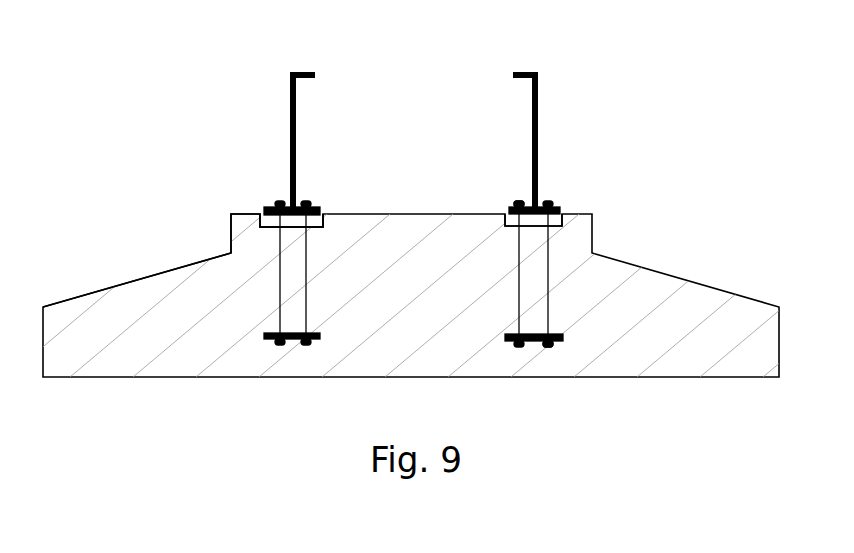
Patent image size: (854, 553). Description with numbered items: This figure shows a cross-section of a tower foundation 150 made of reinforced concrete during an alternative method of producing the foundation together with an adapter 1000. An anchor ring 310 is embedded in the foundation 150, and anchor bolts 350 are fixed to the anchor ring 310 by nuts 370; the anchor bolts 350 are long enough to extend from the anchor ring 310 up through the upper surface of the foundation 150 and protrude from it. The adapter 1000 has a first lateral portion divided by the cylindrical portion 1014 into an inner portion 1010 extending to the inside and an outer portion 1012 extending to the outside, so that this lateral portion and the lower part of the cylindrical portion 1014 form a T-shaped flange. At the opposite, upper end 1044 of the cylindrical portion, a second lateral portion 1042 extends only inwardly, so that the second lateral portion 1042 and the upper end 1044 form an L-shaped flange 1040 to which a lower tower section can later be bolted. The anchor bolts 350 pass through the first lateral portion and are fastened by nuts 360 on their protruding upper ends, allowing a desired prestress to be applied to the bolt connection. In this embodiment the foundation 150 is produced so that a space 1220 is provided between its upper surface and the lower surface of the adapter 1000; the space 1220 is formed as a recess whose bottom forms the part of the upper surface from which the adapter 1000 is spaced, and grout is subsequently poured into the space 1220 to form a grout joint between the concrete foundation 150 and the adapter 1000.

The tower foundation 150 is at (674, 300).
The anchor bolts 350 is at (273, 268).
The space 1220 is at (511, 217).
The outer portion 1012 is at (263, 210).
The L-shaped flange 1040 is at (277, 67).
The second lateral portion 1042 is at (315, 75).
The upper end of the cylindrical portion 1044 is at (292, 92).
The cylindrical portion 1014 is at (297, 172).
The inner portion 1010 is at (563, 192).
The adapter 1000 is at (537, 113).
The nuts 360 is at (518, 202).
The anchor ring 310 is at (563, 336).
The nuts 370 is at (550, 345).